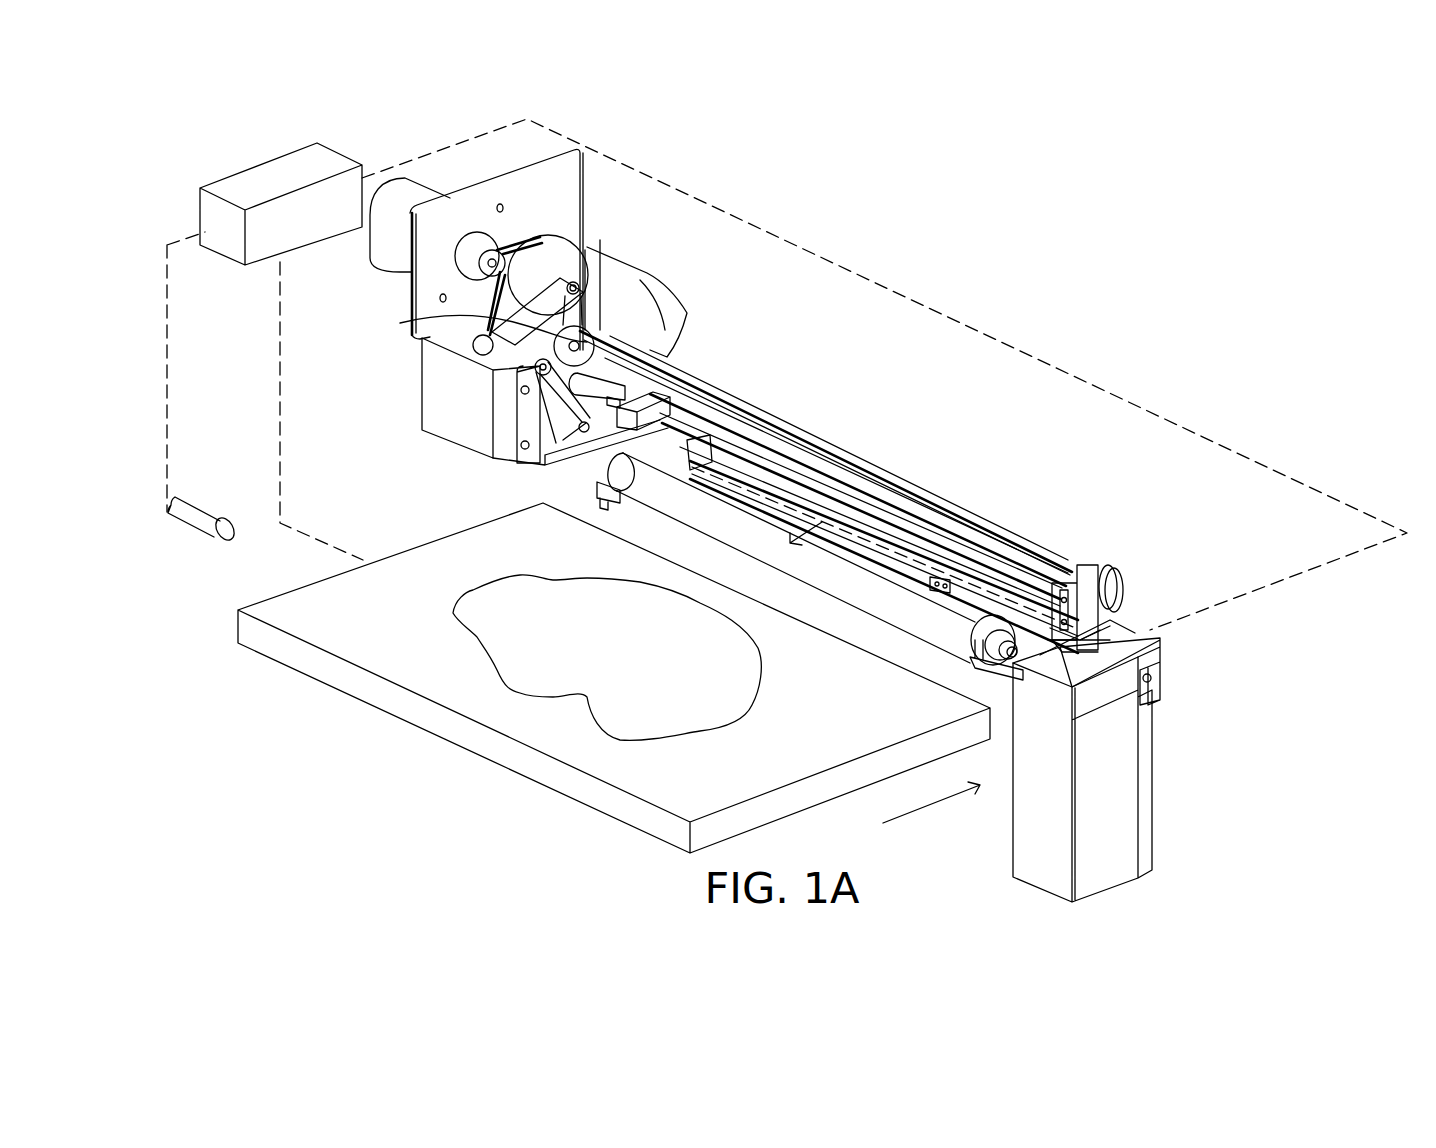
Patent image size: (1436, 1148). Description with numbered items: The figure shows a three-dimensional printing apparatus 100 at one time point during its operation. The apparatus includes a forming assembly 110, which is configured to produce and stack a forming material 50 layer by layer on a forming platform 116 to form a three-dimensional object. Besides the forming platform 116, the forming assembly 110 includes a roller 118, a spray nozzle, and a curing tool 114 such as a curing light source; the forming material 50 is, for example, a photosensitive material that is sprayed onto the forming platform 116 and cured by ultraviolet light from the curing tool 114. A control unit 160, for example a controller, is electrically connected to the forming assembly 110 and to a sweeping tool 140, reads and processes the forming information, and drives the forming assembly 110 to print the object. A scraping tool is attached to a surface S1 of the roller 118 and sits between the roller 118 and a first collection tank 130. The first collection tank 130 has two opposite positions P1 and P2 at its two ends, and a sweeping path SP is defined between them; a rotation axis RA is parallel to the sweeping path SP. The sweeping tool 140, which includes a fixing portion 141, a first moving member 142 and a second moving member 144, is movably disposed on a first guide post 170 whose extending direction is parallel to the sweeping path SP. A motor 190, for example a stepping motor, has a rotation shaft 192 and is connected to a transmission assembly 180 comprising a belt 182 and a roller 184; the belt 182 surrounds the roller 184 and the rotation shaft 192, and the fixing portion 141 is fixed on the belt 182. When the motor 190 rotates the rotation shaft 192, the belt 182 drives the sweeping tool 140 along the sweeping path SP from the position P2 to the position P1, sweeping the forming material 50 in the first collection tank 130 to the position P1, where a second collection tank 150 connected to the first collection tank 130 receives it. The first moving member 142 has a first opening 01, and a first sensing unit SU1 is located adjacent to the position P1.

The 3D printing apparatus 100 is at (1222, 867).
The forming assembly 110 is at (1222, 120).
The curing tool 114 is at (214, 503).
The forming platform 116 is at (797, 803).
The roller 118 is at (850, 437).
The first collection tank 130 is at (1143, 653).
The sweeping tool 140 is at (1328, 173).
The fixing portion 141 is at (665, 350).
The first moving member 142 is at (693, 384).
The second moving member 144 is at (688, 455).
The second collection tank 150 is at (1127, 808).
The control unit 160 is at (277, 178).
The first guide post 170 is at (887, 527).
The transmission assembly 180 is at (1222, 240).
The belt 182 is at (977, 513).
The roller 184 is at (1113, 567).
The motor 190 is at (658, 290).
The rotation shaft 192 is at (493, 318).
The forming material 50 is at (547, 677).
The first opening 01 is at (575, 470).
The position P1 is at (1131, 673).
The position P2 is at (676, 428).
The rotation axis RA is at (1127, 703).
The surface S1 is at (737, 517).
The sweeping path SP is at (1118, 625).
The first sensing unit SU1 is at (1088, 577).